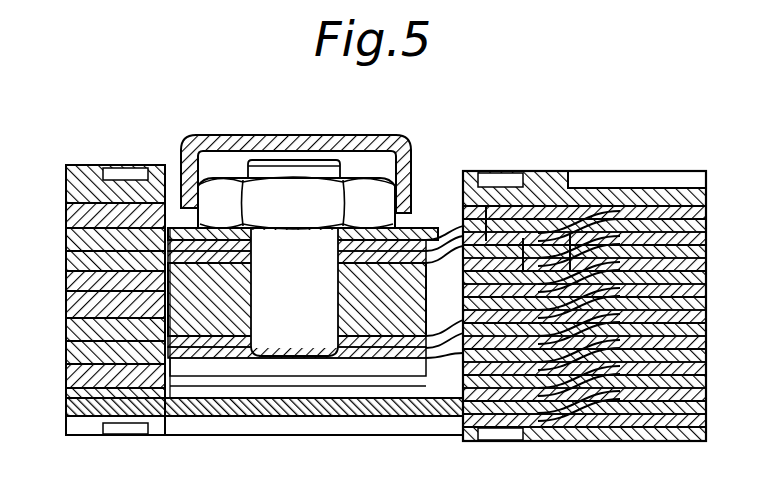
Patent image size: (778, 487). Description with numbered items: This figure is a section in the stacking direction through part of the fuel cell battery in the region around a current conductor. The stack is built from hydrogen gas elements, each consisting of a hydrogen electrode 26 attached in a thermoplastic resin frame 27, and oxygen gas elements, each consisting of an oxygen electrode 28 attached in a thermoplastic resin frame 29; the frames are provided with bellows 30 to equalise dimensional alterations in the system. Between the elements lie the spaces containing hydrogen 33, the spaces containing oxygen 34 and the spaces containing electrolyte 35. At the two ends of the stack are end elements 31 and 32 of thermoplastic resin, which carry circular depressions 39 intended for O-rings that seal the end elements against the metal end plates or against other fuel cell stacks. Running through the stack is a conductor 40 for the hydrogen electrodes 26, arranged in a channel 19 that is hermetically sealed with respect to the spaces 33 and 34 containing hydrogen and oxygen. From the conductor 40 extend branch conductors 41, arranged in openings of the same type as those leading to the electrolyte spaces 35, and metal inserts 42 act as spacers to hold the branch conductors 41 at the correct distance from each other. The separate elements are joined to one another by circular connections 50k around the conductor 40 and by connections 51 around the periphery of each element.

The channel 19 is at (170, 378).
The hydrogen electrode 26 is at (672, 257).
The thermoplastic resin frame 27 is at (487, 248).
The oxygen electrode 28 is at (687, 300).
The thermoplastic resin frame 29 is at (513, 262).
The bellows 30 is at (565, 264).
The end element 31 is at (607, 418).
The end element 32 is at (637, 192).
The hydrogen space 33 is at (710, 257).
The oxygen space 34 is at (710, 204).
The electrolyte space 35 is at (710, 230).
The circular depression 39 is at (110, 170).
The conductor 40 is at (288, 340).
The branch conductor 41 is at (442, 238).
The metal insert 42 is at (377, 320).
The circular connection around the conductor 50k is at (181, 350).
The connection around the periphery 51 is at (58, 305).